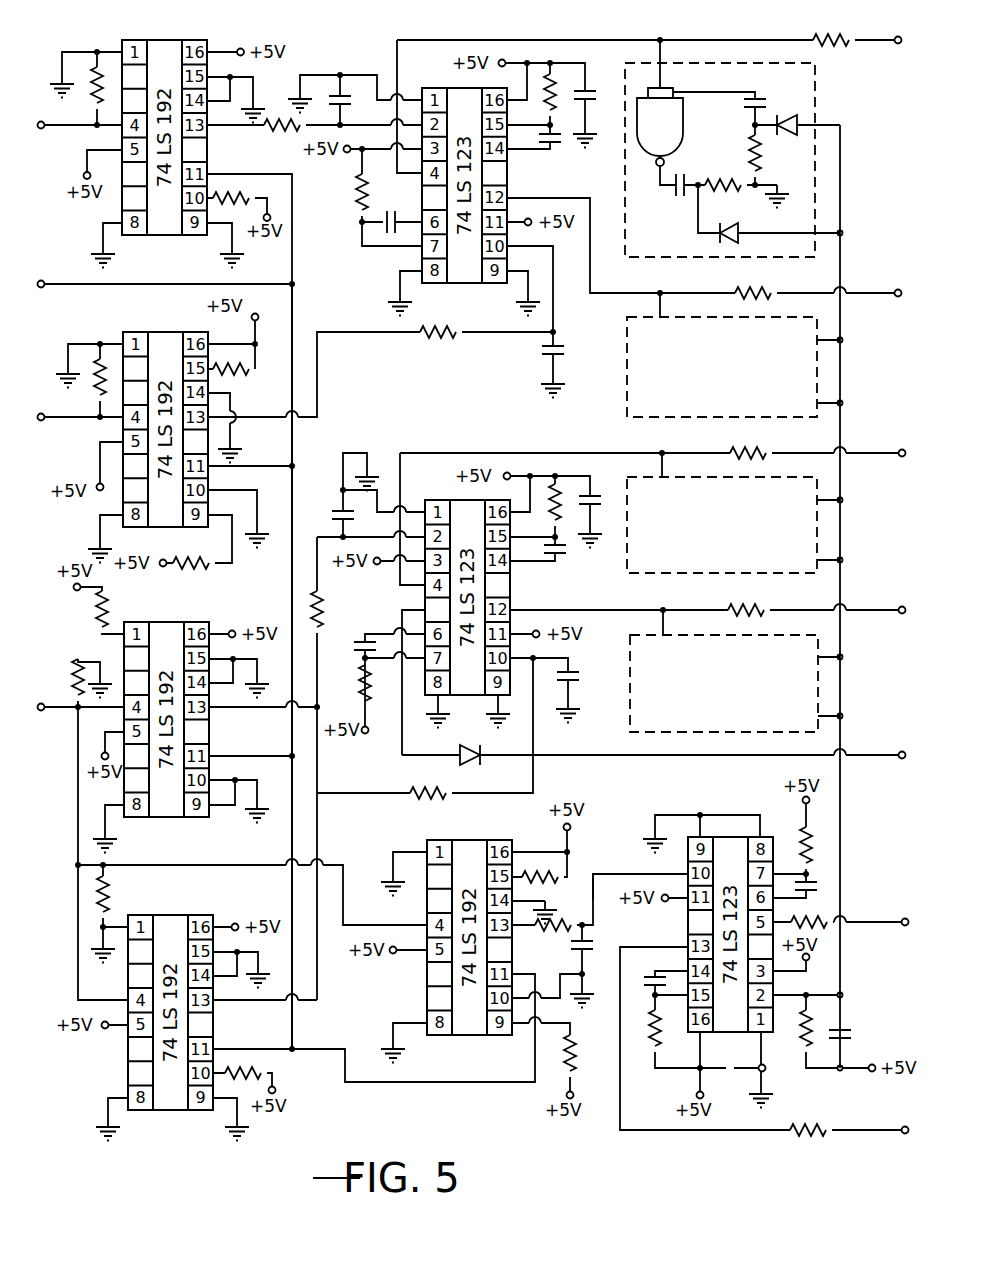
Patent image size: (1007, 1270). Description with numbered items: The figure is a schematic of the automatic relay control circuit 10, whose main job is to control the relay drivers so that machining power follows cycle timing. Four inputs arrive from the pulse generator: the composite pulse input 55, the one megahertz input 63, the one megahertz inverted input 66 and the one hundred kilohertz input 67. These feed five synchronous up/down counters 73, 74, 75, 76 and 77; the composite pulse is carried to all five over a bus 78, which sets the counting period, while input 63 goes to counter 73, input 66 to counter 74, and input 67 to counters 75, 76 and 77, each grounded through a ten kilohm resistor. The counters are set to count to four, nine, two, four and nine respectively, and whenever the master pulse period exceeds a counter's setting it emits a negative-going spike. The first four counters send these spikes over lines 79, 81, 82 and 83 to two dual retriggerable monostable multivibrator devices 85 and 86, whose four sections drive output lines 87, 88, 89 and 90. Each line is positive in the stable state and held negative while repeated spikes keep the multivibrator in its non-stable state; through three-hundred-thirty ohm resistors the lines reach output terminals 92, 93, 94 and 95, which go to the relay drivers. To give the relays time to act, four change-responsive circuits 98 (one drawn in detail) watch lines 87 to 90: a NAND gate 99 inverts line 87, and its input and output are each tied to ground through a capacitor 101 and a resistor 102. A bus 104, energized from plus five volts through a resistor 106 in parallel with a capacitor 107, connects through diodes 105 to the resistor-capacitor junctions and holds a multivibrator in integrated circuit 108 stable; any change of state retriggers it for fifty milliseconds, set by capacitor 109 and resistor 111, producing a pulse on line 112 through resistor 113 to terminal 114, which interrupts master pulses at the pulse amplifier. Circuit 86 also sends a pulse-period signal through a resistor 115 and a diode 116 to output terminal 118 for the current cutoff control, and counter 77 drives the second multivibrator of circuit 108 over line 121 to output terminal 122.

The automatic relay control circuit 10 is at (440, 1106).
The composite pulse input 55 is at (42, 280).
The 1 MHz input 63 is at (41, 131).
The 1 MHz inverted input 66 is at (42, 413).
The 100 kHz input 67 is at (42, 703).
The counter 73 is at (158, 40).
The counter 74 is at (160, 332).
The counter 75 is at (162, 622).
The counter 76 is at (172, 915).
The counter 77 is at (495, 840).
The bus 78 is at (292, 308).
The outlet line 79 is at (238, 128).
The line 81 is at (350, 334).
The line 82 is at (262, 712).
The line 83 is at (322, 793).
The integrated circuit device 85 is at (470, 88).
The integrated circuit device 86 is at (470, 500).
The line 87 is at (397, 50).
The line 88 is at (583, 186).
The line 89 is at (520, 453).
The line 90 is at (545, 610).
The output terminal 92 is at (898, 44).
The output terminal 93 is at (898, 289).
The output terminal 94 is at (902, 449).
The output terminal 95 is at (902, 606).
The change-responsive circuit 98 is at (734, 397).
The NAND gate 99 is at (683, 122).
The capacitor 101 is at (760, 102).
The resistor 102 is at (752, 160).
The bus 104 is at (843, 190).
The diode 105 is at (789, 137).
The resistor 106 is at (812, 1048).
The capacitor 107 is at (850, 1050).
The integrated circuit 108 is at (732, 837).
The capacitor 109 is at (655, 985).
The resistor 111 is at (655, 1052).
The line 112 is at (620, 1128).
The resistor 113 is at (815, 1128).
The terminal 114 is at (906, 1126).
The resistor 115 is at (400, 740).
The diode 116 is at (458, 760).
The output terminal 118 is at (902, 751).
The line 121 is at (622, 874).
The output terminal 122 is at (905, 918).